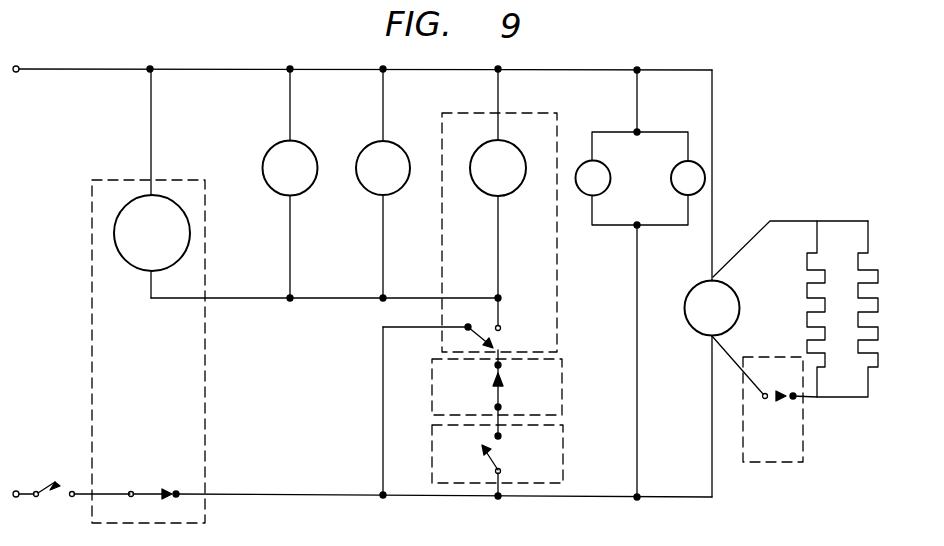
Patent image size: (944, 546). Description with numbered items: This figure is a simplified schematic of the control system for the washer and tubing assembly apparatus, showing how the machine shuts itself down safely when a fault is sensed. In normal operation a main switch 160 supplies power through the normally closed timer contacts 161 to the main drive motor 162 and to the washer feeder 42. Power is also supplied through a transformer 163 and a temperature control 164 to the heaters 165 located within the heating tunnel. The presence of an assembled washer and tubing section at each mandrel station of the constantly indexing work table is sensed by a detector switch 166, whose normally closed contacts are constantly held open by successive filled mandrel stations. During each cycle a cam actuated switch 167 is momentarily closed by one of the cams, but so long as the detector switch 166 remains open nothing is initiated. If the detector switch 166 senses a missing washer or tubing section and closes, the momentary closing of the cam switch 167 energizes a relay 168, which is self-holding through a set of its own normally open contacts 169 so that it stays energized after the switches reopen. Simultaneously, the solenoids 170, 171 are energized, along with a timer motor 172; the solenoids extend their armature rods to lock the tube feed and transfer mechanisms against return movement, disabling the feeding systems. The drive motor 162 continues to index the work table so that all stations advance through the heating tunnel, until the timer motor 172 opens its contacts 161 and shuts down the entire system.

The washer feeder 42 is at (598, 172).
The main switch 160 is at (52, 460).
The timer contacts 161 is at (156, 460).
The main drive motor 162 is at (688, 172).
The transformer 163 is at (777, 278).
The temperature control 164 is at (777, 427).
The heaters 165 is at (824, 262).
The detector switch 166 is at (500, 395).
The cam actuated switch 167 is at (490, 463).
The relay 168 is at (506, 178).
The normally open contacts 169 is at (487, 338).
The solenoid 170 is at (383, 153).
The solenoid 171 is at (290, 153).
The timer motor 172 is at (152, 212).